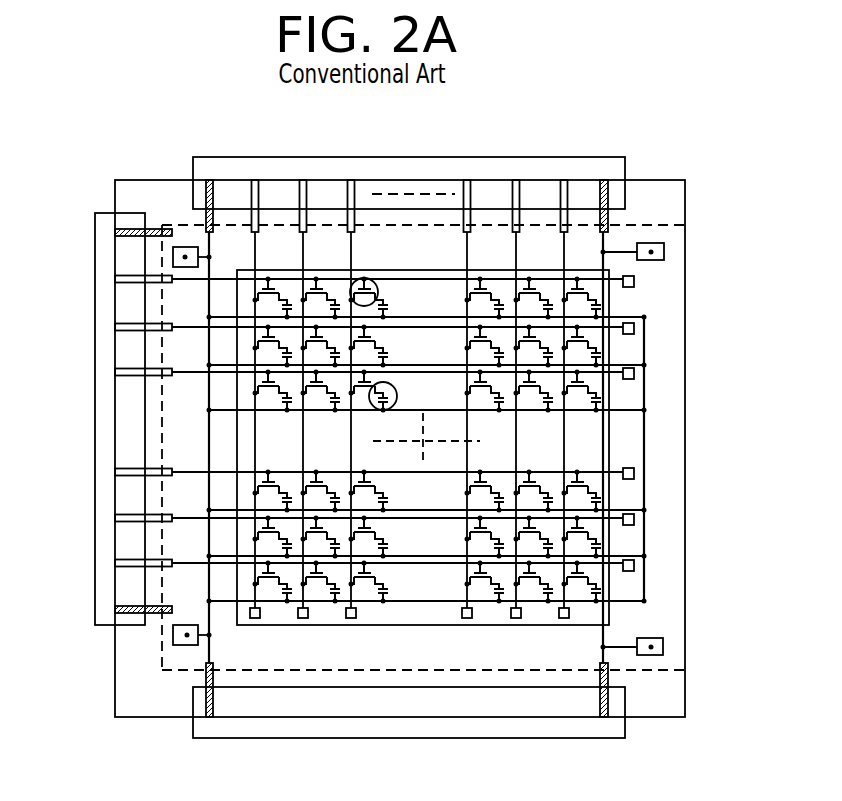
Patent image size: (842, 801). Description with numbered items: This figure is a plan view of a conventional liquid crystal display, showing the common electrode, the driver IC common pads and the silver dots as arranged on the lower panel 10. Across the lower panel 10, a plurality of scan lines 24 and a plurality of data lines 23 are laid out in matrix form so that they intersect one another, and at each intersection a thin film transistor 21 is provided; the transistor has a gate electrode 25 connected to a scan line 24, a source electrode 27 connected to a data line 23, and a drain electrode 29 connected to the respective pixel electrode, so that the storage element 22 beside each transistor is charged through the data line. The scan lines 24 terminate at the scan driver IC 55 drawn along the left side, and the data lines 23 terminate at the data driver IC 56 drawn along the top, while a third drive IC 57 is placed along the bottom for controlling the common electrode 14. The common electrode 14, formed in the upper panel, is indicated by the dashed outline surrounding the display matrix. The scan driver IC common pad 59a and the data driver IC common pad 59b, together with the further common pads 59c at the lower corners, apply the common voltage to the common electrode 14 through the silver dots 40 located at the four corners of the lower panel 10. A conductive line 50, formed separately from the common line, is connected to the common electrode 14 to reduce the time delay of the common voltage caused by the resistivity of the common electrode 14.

The lower panel 10 is at (685, 690).
The common electrode 14 is at (348, 670).
The thin film transistor 21 is at (380, 291).
The storage capacitor 22 is at (397, 391).
The data line 23 is at (567, 430).
The scan line 24 is at (193, 327).
The gate electrode 25 is at (322, 480).
The source electrode 27 is at (257, 393).
The drain electrode 29 is at (288, 300).
The silver dot 40 is at (175, 643).
The conductive line 50 is at (603, 640).
The scan driver IC 55 is at (95, 220).
The data driver IC 56 is at (528, 168).
The third drive IC 57 is at (492, 738).
The scan driver IC common pad 59a is at (130, 608).
The data driver IC common pad 59b is at (600, 192).
The connection terminal 59c is at (600, 695).